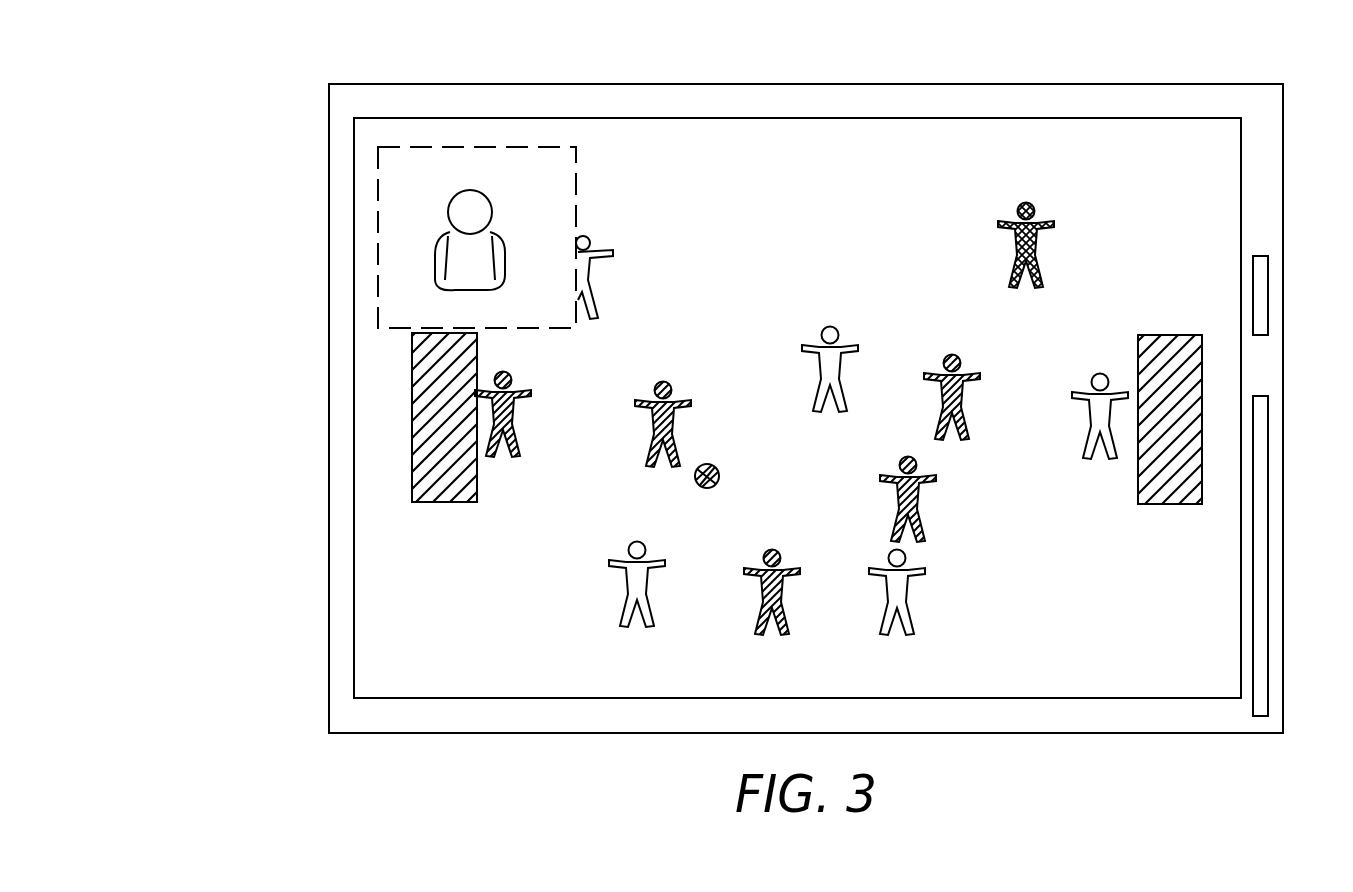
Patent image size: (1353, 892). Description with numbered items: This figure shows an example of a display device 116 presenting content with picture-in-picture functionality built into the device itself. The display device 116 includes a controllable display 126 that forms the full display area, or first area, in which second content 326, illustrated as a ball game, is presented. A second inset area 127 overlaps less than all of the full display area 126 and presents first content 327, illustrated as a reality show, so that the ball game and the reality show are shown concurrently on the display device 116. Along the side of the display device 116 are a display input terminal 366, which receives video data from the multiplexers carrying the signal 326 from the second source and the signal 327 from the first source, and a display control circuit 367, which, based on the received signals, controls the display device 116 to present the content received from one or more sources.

The display device 116 is at (975, 83).
The controllable display 126 is at (1153, 148).
The inset area 127 is at (481, 147).
The second content 326 is at (1022, 185).
The first content 327 is at (435, 254).
The display input terminal 366 is at (1268, 296).
The display control circuit 367 is at (1268, 556).